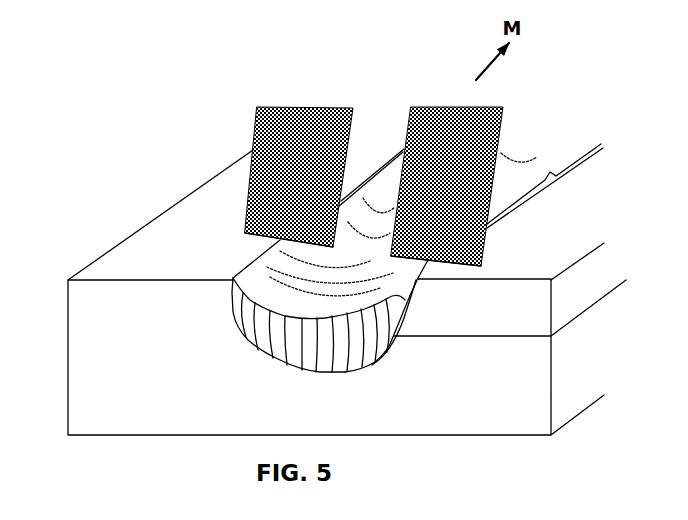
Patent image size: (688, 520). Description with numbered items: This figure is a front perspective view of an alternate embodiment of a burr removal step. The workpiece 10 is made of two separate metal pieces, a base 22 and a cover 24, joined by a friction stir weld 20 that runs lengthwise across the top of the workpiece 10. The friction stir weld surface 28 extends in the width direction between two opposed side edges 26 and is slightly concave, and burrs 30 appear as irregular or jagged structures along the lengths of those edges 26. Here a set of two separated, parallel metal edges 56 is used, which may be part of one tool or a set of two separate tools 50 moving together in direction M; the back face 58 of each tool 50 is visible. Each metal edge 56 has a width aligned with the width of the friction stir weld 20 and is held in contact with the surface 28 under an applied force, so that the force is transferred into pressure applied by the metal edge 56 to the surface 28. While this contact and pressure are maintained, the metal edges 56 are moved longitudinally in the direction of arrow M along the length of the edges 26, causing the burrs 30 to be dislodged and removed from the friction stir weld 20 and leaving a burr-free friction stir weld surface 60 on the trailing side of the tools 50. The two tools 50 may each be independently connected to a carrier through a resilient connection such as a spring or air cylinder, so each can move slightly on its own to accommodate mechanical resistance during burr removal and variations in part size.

The workpiece 10 is at (50, 258).
The friction stir weld 20 is at (371, 335).
The base 22 is at (596, 357).
The cover 24 is at (605, 272).
The side edges 26 is at (394, 157).
The friction stir weld surface 28 is at (275, 285).
The burrs 30 is at (366, 181).
The deburring tool 50 is at (243, 102).
The metal edge 56 is at (243, 225).
The back face 58 is at (288, 193).
The burr-free friction stir weld surface 60 is at (234, 259).